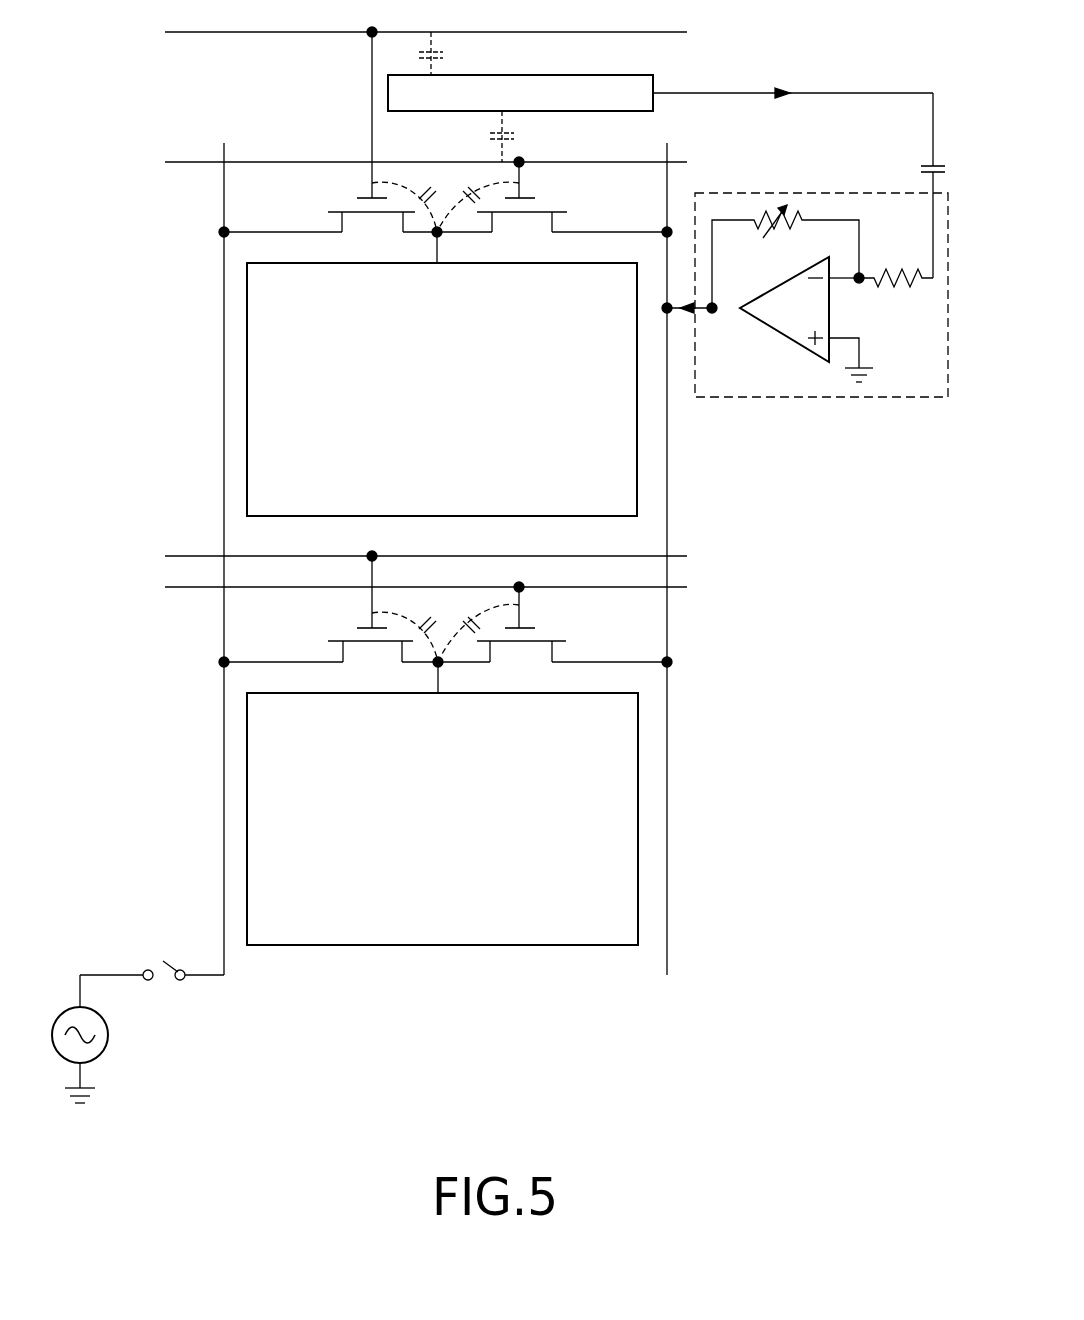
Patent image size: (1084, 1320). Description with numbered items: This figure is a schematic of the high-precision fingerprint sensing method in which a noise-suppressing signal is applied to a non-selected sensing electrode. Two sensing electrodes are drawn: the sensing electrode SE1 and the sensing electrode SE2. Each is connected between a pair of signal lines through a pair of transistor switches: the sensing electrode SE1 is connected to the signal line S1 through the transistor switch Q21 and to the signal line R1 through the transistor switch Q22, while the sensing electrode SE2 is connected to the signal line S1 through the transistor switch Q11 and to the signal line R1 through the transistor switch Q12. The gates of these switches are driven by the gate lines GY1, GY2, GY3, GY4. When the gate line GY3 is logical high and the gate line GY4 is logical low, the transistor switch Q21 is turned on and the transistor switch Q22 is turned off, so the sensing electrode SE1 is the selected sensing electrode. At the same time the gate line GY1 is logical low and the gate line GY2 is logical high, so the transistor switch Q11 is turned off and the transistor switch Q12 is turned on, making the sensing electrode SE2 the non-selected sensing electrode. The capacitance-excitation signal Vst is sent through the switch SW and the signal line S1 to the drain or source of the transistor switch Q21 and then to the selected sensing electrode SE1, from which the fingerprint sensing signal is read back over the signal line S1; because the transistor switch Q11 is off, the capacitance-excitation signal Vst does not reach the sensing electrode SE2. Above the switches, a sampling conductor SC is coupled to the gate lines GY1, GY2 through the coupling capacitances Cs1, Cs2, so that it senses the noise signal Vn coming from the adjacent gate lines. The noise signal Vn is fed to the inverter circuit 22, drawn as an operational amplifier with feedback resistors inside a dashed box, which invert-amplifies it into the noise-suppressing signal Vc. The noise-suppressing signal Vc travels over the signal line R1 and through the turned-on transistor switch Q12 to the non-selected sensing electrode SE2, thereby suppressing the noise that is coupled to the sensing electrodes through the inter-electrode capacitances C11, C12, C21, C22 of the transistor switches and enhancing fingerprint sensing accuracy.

The inverter circuit 22 is at (820, 397).
The gate line GY1 is at (379, 33).
The gate line GY2 is at (379, 163).
The gate line GY3 is at (379, 553).
The gate line GY4 is at (379, 595).
The coupling capacitance Cs1 is at (458, 53).
The coupling capacitance Cs2 is at (529, 136).
The sampling conductor SC is at (520, 93).
The noise signal Vn is at (793, 112).
The noise-suppressing signal Vc is at (687, 294).
The transistor switch Q11 is at (328, 144).
The transistor switch Q12 is at (552, 212).
The transistor switch Q21 is at (328, 621).
The transistor switch Q22 is at (552, 640).
The inter-electrode capacitance C11 is at (404, 195).
The inter-electrode capacitance C12 is at (478, 195).
The inter-electrode capacitance C21 is at (405, 625).
The inter-electrode capacitance C22 is at (478, 625).
The sensing electrode SE1 is at (442, 819).
The sensing electrode SE2 is at (442, 389).
The signal line S1 is at (242, 565).
The signal line R1 is at (686, 564).
The switch SW is at (152, 988).
The capacitance-excitation signal Vst is at (103, 1039).